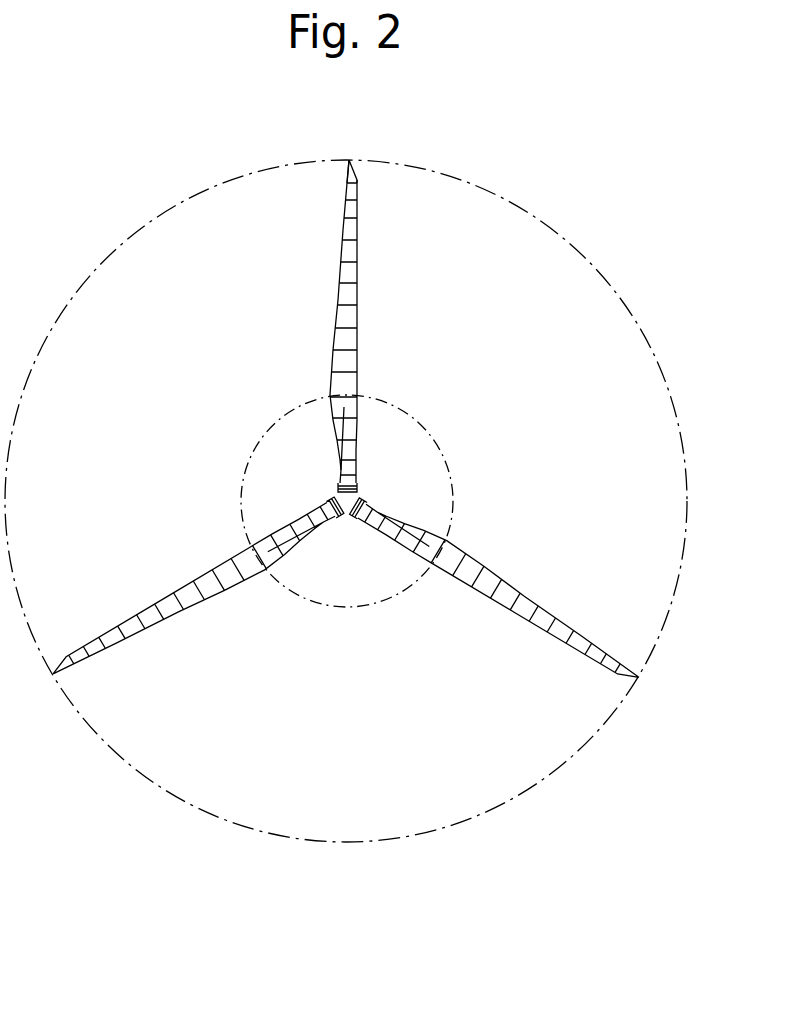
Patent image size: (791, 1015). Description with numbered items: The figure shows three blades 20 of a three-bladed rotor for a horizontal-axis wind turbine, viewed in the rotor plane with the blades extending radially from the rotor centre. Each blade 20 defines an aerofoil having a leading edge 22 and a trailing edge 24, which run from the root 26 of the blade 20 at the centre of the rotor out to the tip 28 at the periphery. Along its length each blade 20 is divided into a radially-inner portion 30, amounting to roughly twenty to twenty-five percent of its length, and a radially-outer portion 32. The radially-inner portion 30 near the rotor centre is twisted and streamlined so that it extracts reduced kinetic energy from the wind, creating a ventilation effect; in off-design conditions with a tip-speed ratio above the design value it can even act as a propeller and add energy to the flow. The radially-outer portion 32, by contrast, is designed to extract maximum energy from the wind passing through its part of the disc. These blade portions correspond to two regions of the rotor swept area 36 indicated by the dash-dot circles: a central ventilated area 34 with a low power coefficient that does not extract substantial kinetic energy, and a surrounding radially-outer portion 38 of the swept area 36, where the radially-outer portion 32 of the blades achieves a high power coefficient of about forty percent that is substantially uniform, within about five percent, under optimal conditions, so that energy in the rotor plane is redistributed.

The blade 20 is at (414, 352).
The leading edge 22 is at (357, 286).
The trailing edge 24 is at (333, 338).
The root 26 is at (343, 497).
The tip 28 is at (349, 162).
The radially-inner portion 30 is at (236, 397).
The radially-outer portion 32 is at (236, 160).
The central ventilated area 34 is at (412, 490).
The rotor swept area 36 is at (568, 240).
The radially-outer portion of the swept area 38 is at (565, 467).